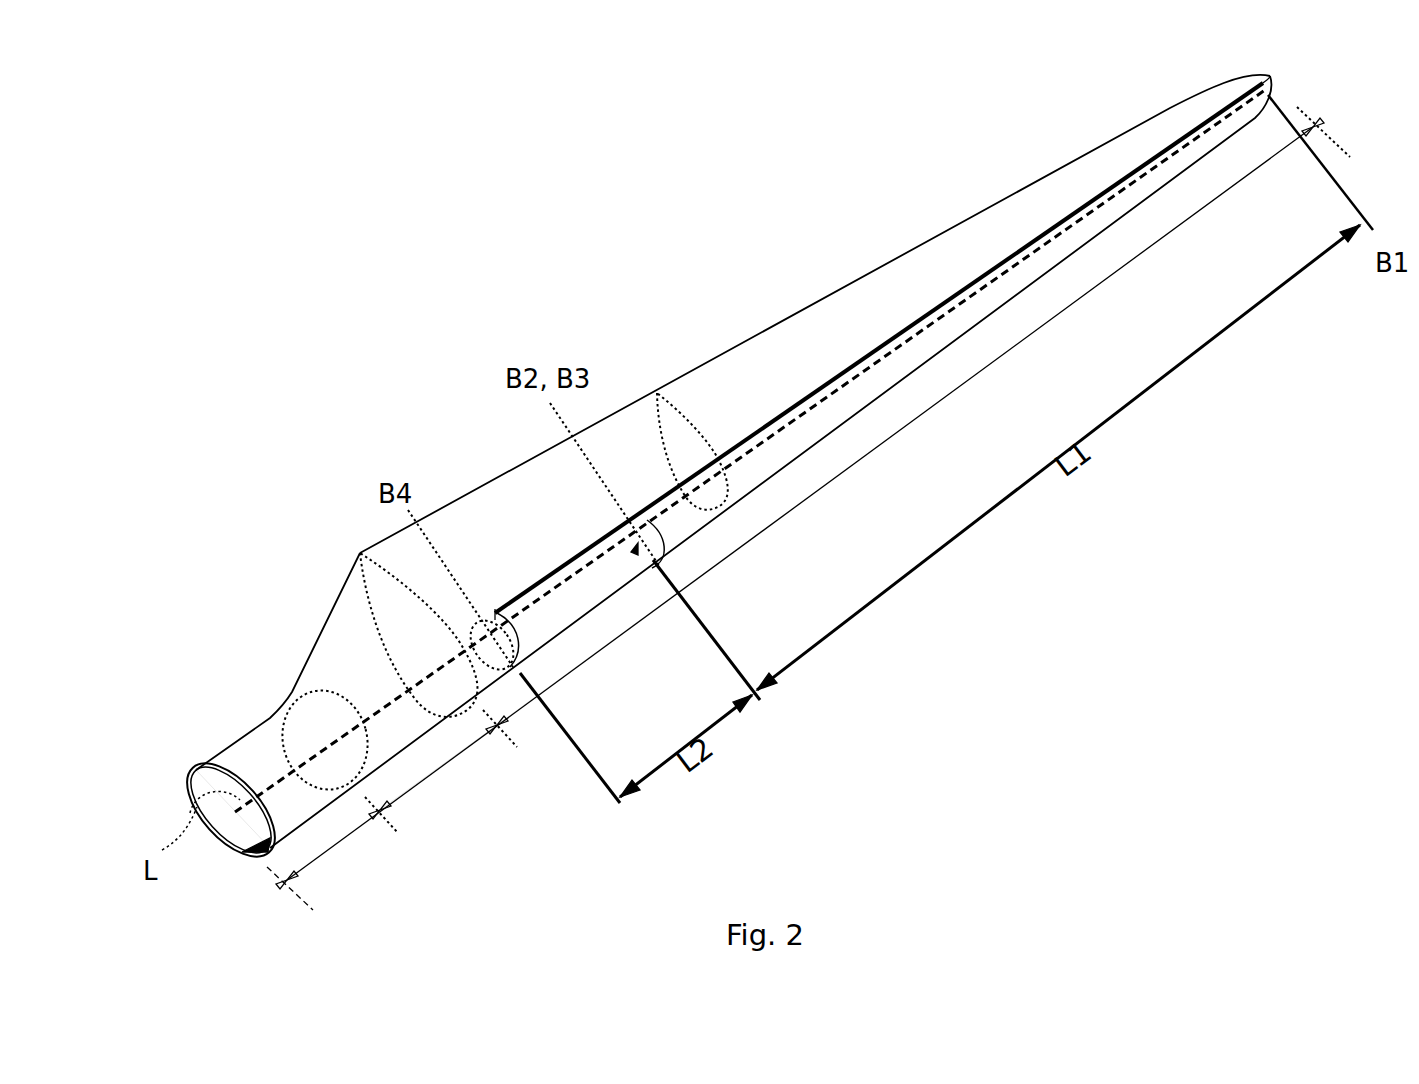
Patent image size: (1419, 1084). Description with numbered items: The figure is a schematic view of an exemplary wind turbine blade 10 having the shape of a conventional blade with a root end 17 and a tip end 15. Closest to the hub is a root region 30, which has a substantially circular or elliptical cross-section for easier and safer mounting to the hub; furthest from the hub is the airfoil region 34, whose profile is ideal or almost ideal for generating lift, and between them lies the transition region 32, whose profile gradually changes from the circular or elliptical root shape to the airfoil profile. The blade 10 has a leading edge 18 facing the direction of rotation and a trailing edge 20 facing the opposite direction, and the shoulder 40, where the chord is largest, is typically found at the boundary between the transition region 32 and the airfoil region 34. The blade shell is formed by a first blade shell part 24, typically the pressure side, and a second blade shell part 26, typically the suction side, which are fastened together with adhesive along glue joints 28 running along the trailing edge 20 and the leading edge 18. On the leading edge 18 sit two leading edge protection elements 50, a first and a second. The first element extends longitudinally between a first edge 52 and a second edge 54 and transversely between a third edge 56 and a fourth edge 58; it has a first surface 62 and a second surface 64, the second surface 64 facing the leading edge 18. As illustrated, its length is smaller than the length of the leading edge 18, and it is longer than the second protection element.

The wind turbine blade 10 is at (530, 322).
The tip end 15 is at (1270, 75).
The root end 17 is at (205, 763).
The leading edge 18 is at (977, 353).
The trailing edge 20 is at (823, 297).
The first blade shell part 24 is at (203, 778).
The second blade shell part 26 is at (217, 857).
The glue joints 28 is at (212, 780).
The root region 30 is at (340, 847).
The transition region 32 is at (447, 765).
The airfoil region 34 is at (827, 487).
The shoulder 40 is at (360, 553).
The leading edge protection elements 50 is at (893, 393).
The first edge 52 is at (1187, 150).
The second edge 54 is at (643, 547).
The third edge 56 is at (950, 298).
The fourth edge 58 is at (905, 328).
The first surface 62 is at (690, 527).
The second surface 64 is at (638, 547).